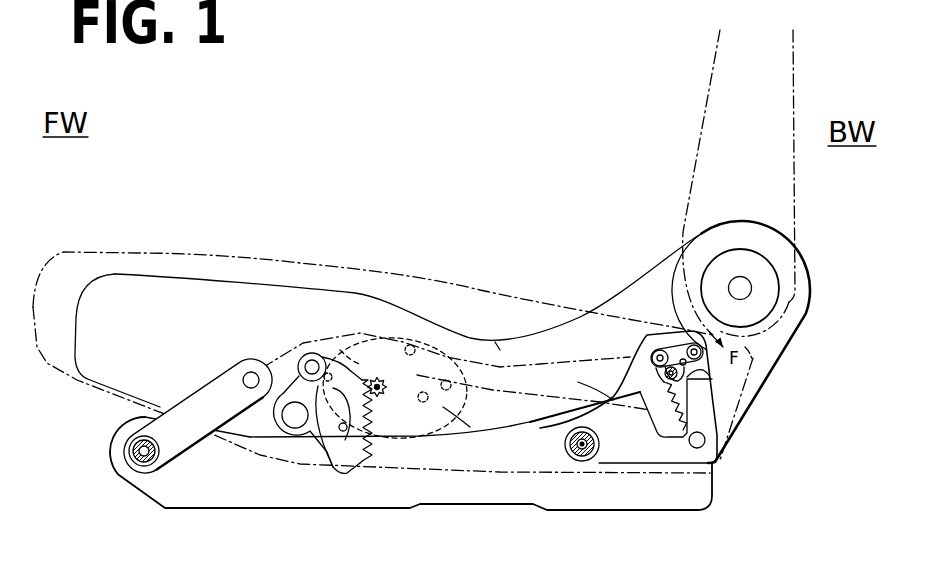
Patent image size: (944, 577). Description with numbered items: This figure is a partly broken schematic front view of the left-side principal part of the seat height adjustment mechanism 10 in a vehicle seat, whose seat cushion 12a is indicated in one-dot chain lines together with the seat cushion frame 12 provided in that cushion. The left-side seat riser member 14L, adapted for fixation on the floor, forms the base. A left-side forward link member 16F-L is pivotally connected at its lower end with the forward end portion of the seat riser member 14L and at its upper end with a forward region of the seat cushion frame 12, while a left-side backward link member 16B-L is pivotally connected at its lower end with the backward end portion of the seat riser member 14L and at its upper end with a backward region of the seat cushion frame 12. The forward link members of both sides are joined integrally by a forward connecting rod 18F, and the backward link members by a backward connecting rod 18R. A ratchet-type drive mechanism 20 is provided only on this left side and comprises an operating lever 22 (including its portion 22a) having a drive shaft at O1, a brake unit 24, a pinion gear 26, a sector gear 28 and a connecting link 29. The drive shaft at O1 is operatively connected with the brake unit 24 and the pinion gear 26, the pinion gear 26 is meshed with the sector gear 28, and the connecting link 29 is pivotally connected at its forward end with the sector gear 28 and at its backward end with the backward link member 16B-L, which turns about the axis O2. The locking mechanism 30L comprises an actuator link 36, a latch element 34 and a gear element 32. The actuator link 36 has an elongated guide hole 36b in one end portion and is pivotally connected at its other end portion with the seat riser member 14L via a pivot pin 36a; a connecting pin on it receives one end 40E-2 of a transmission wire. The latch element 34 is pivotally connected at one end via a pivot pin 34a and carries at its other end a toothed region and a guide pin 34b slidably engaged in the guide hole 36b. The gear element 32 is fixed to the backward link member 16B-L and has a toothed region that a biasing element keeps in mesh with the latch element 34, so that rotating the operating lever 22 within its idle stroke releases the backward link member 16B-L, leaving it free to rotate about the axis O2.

The seat height adjustment mechanism 10 is at (670, 477).
The seat cushion frame 12 is at (184, 290).
The seat cushion 12a is at (245, 258).
The left-side seat riser member 14L is at (217, 502).
The left-side forward link member 16F-L is at (187, 403).
The left-side backward link member 16B-L is at (625, 457).
The forward connecting rod 18F is at (133, 463).
The backward connecting rod 18R is at (572, 455).
The ratchet-type drive mechanism 20 is at (288, 454).
The operating lever 22 is at (292, 362).
The lever arm 22a is at (443, 407).
The brake unit 24 is at (393, 343).
The pinion gear 26 is at (380, 396).
The sector gear 28 is at (305, 440).
The connecting link 29 is at (500, 347).
The locking mechanism 30L is at (666, 344).
The gear element 32 is at (578, 380).
The latch element 34 is at (656, 354).
The pivot pin 34a is at (652, 357).
The guide pin 34b is at (705, 408).
The actuator link 36 is at (688, 347).
The pivot pin 36a is at (693, 346).
The elongated guide hole 36b is at (677, 381).
The end of transmission element 40E-2 is at (714, 377).
The drive shaft O1 is at (372, 386).
The axis O2 is at (580, 450).